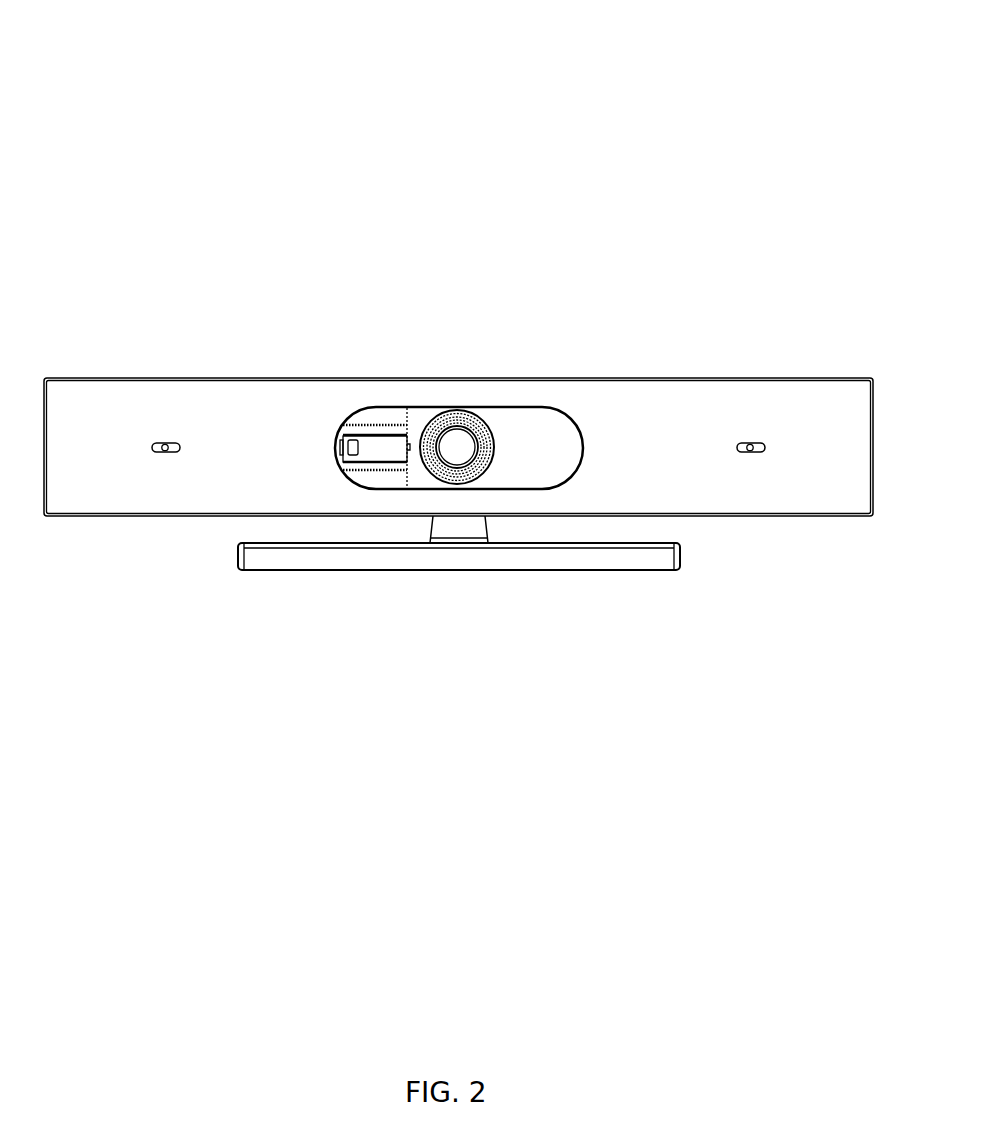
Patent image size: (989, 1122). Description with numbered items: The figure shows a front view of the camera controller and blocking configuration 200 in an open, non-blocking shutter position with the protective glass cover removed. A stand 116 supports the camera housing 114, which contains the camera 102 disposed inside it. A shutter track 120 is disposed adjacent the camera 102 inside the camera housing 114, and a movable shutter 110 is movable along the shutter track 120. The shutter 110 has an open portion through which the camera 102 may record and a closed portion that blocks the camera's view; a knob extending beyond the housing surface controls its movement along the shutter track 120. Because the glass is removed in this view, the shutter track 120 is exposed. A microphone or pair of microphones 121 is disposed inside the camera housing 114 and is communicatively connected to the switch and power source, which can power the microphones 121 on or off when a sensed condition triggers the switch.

The configuration 200 is at (63, 22).
The camera 102 is at (470, 446).
The shutter 110 is at (430, 417).
The camera housing 114 is at (537, 376).
The stand 116 is at (430, 568).
The shutter track 120 is at (370, 433).
The microphones 121 is at (165, 443).